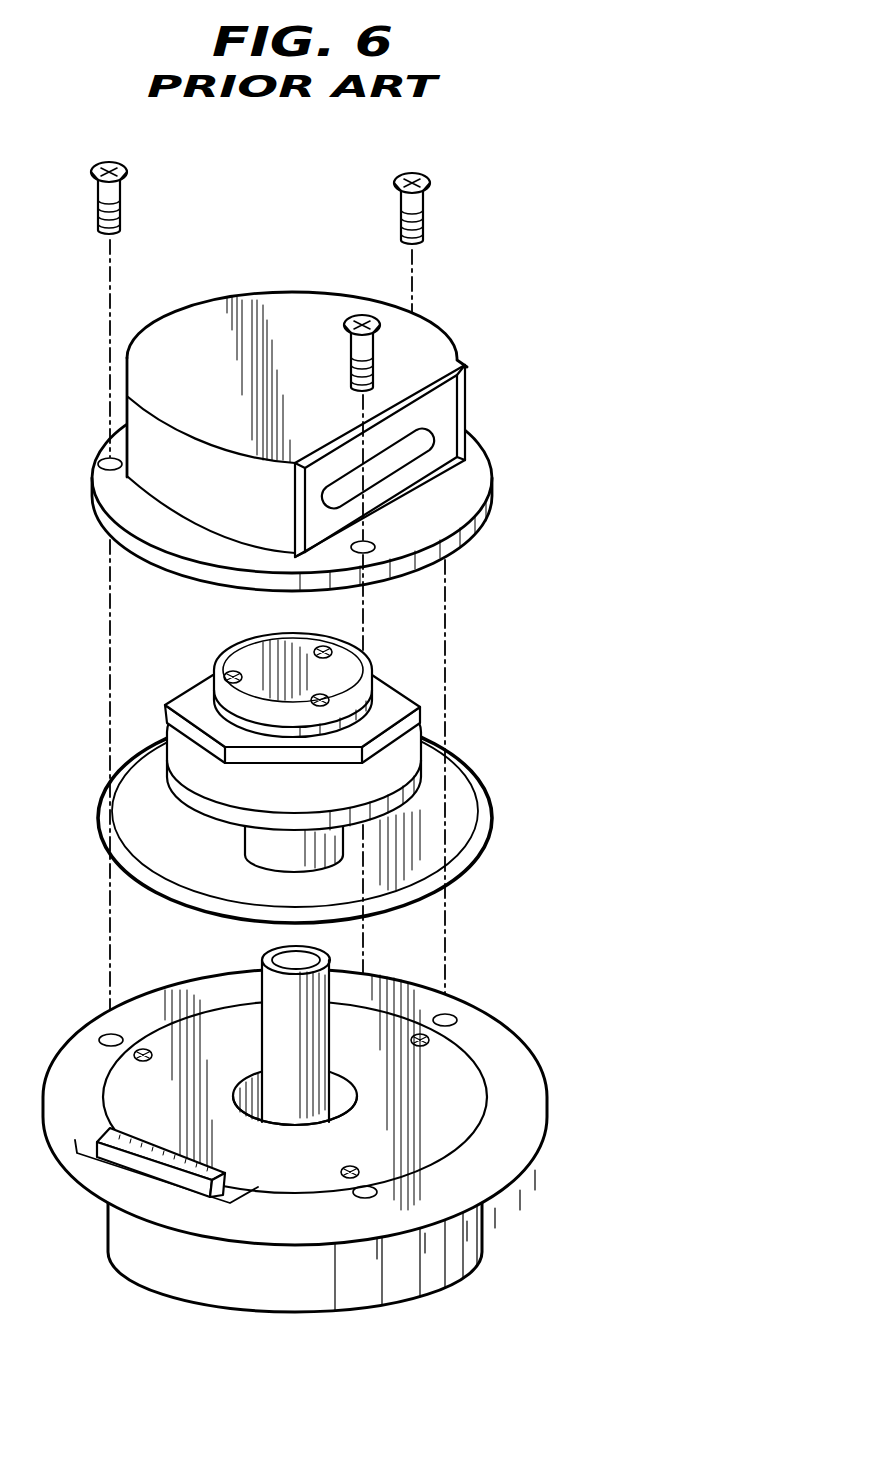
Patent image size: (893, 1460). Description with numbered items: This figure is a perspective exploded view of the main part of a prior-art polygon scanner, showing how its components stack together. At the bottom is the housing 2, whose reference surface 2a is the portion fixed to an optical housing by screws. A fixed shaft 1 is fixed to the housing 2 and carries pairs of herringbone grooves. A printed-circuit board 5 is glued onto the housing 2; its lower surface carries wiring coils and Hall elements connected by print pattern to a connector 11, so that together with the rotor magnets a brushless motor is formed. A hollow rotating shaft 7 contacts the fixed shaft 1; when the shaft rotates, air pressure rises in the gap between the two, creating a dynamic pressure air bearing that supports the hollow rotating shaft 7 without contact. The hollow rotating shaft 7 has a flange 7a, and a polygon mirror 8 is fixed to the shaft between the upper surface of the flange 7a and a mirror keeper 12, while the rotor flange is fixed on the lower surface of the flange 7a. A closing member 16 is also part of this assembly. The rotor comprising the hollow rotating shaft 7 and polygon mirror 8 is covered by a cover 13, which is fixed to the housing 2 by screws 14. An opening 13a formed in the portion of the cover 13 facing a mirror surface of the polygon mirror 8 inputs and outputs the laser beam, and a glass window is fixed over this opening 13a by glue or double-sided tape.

The fixed shaft 1 is at (270, 1040).
The housing 2 is at (519, 1109).
The reference surface 2a is at (493, 1187).
The printed-circuit board 5 is at (453, 1063).
The hollow rotating shaft 7 is at (253, 840).
The flange 7a is at (165, 737).
The polygon mirror 8 is at (195, 702).
The connector 11 is at (130, 1158).
The mirror keeper 12 is at (422, 706).
The cover 13 is at (430, 350).
The opening 13a is at (433, 432).
The screws 14 is at (133, 203).
The closing member 16 is at (490, 847).